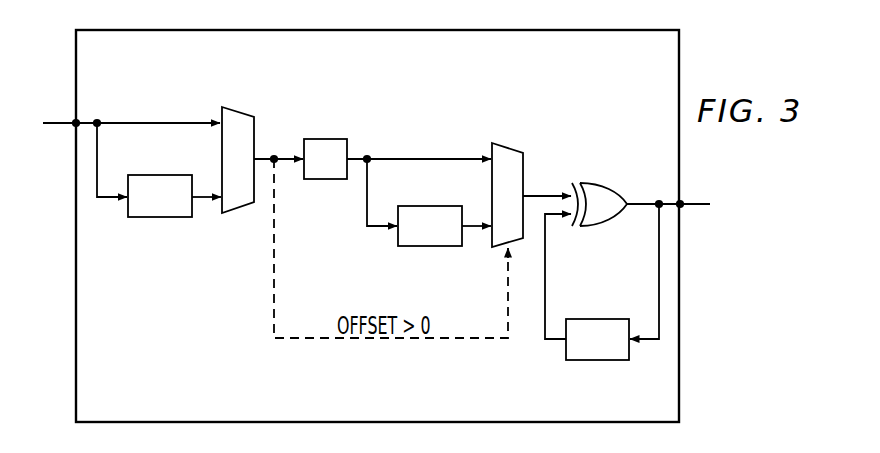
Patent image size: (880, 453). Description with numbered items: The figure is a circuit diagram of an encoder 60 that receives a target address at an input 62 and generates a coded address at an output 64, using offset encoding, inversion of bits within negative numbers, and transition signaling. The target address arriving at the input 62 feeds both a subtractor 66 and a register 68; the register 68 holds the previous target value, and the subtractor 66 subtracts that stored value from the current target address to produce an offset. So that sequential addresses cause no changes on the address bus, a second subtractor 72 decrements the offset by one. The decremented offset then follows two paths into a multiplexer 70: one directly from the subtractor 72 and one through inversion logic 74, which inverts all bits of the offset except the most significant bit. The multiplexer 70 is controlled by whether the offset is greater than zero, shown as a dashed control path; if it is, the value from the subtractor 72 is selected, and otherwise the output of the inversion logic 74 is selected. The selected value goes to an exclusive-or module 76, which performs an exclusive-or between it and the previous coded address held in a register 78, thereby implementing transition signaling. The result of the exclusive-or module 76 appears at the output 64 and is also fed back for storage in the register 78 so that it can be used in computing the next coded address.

The encoder 60 is at (681, 289).
The input 62 is at (70, 121).
The output 64 is at (688, 203).
The subtractor 66 is at (241, 112).
The register 68 is at (160, 218).
The multiplexer 70 is at (510, 150).
The subtractor 72 is at (326, 139).
The inversion logic 74 is at (428, 246).
The exclusive-or module 76 is at (592, 184).
The register 78 is at (598, 361).